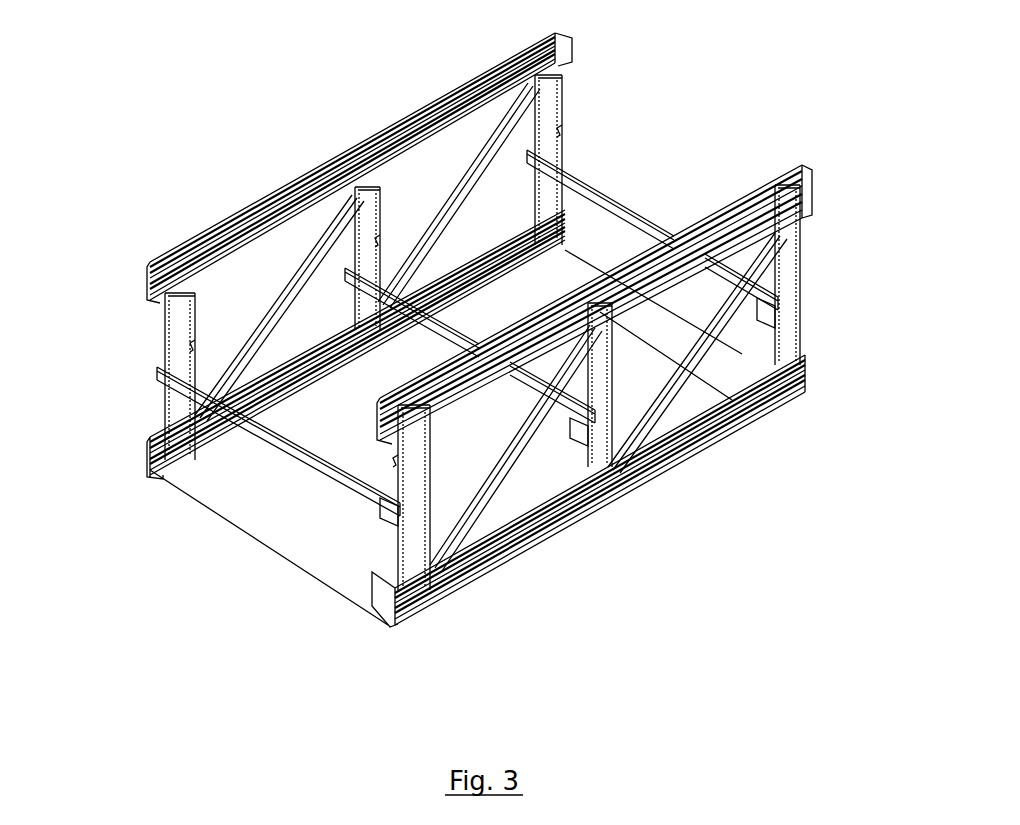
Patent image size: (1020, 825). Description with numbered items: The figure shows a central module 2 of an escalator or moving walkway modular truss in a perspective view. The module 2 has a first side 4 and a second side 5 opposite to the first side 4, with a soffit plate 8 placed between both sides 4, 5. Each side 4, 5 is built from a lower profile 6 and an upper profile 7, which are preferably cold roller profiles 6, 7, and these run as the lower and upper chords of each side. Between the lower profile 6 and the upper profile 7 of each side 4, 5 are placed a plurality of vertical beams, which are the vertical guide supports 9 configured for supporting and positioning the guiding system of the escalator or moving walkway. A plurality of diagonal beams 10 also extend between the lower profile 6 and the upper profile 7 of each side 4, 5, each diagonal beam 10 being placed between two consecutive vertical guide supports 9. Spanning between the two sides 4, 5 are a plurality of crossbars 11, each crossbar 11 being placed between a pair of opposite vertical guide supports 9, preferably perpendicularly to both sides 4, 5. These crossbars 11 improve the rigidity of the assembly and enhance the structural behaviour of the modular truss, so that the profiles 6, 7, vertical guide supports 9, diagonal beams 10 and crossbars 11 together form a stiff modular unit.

The central module 2 is at (672, 110).
The first side 4 is at (143, 342).
The second side 5 is at (392, 628).
The lower profile 6 is at (155, 458).
The upper profile 7 is at (453, 100).
The soffit plate 8 is at (258, 528).
The vertical guide support 9 is at (173, 347).
The diagonal beam 10 is at (247, 272).
The crossbar 11 is at (583, 400).